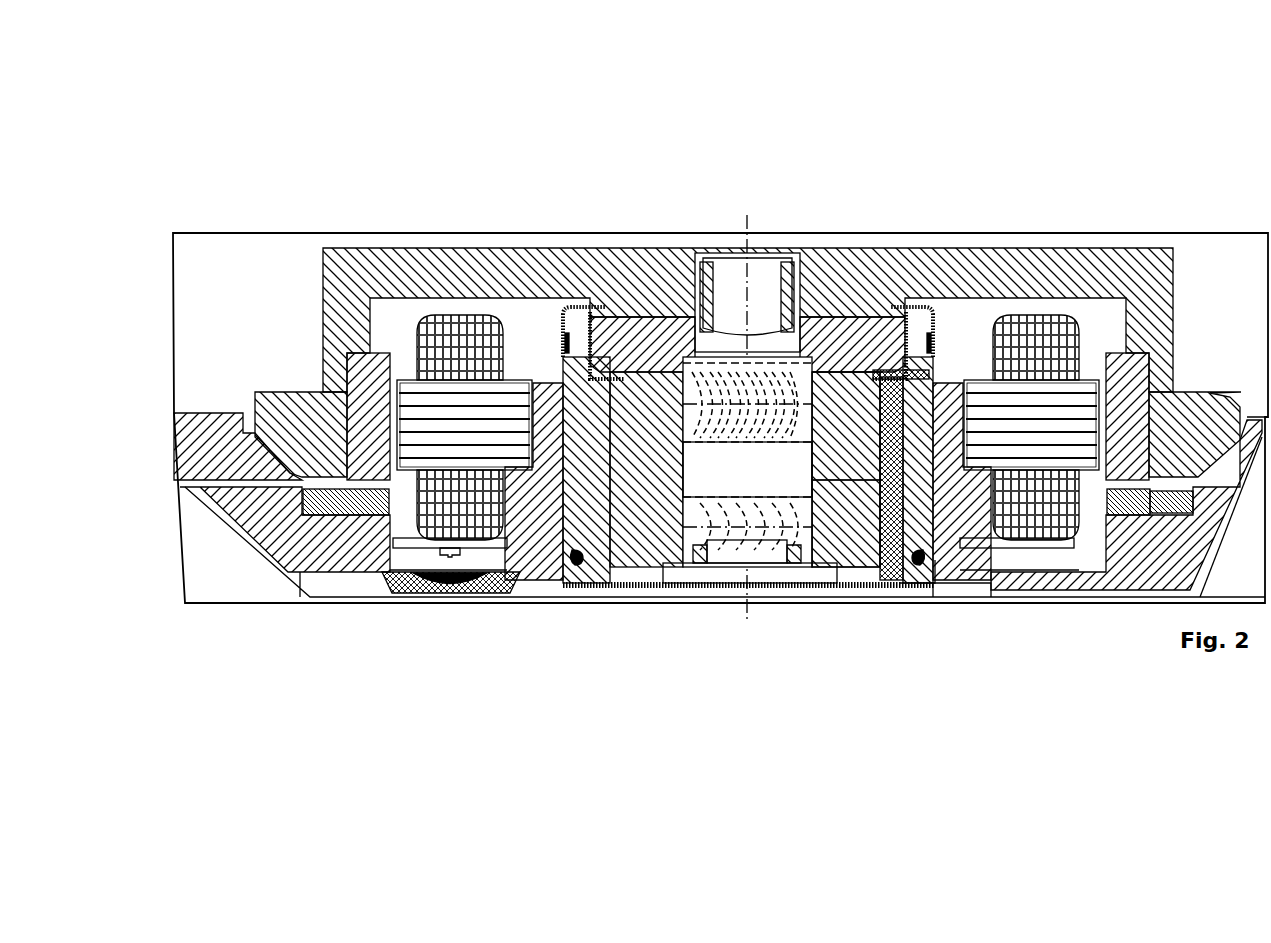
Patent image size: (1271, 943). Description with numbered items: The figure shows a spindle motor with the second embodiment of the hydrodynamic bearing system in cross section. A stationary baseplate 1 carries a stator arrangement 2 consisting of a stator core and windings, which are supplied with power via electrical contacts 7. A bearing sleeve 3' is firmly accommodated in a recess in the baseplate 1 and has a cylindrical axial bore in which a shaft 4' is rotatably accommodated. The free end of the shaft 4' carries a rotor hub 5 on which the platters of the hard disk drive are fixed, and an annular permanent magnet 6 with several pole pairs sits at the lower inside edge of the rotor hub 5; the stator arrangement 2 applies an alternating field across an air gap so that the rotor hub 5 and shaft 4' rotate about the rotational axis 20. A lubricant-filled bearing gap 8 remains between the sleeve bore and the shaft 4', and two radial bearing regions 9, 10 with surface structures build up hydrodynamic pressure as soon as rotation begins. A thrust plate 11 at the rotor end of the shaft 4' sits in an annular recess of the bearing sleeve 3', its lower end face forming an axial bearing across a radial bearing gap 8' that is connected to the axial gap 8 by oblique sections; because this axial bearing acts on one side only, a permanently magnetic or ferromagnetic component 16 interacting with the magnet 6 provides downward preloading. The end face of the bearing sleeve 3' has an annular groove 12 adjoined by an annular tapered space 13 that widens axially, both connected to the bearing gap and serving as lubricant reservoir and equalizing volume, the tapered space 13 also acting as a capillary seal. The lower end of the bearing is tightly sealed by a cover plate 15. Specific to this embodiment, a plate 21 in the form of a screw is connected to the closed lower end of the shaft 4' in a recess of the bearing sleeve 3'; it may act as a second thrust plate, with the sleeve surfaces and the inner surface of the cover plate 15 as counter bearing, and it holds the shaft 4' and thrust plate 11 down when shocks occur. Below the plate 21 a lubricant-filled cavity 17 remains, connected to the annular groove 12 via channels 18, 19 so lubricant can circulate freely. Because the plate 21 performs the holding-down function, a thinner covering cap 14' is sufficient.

The baseplate 1 is at (280, 522).
The stator arrangement 2 is at (458, 457).
The bearing sleeve 3' is at (878, 601).
The shaft 4' is at (841, 655).
The rotor hub 5 is at (393, 273).
The annular permanent magnet 6 is at (363, 397).
The electrical contacts 7 is at (448, 548).
The bearing gap 8 is at (747, 594).
The radial bearing gap 8' is at (734, 206).
The radial bearing region 9 is at (733, 505).
The radial bearing region 10 is at (800, 370).
The thrust plate 11 is at (855, 375).
The annular groove 12 is at (690, 385).
The annular tapered space 13 is at (588, 340).
The covering cap 14' is at (953, 206).
The cover plate 15 is at (645, 586).
The permanently magnetic or ferromagnetic component 16 is at (343, 515).
The cavity 17 is at (783, 473).
The channel 18 is at (870, 588).
The channel 19 is at (905, 460).
The rotational axis 20 is at (747, 240).
The plate 21 is at (735, 573).